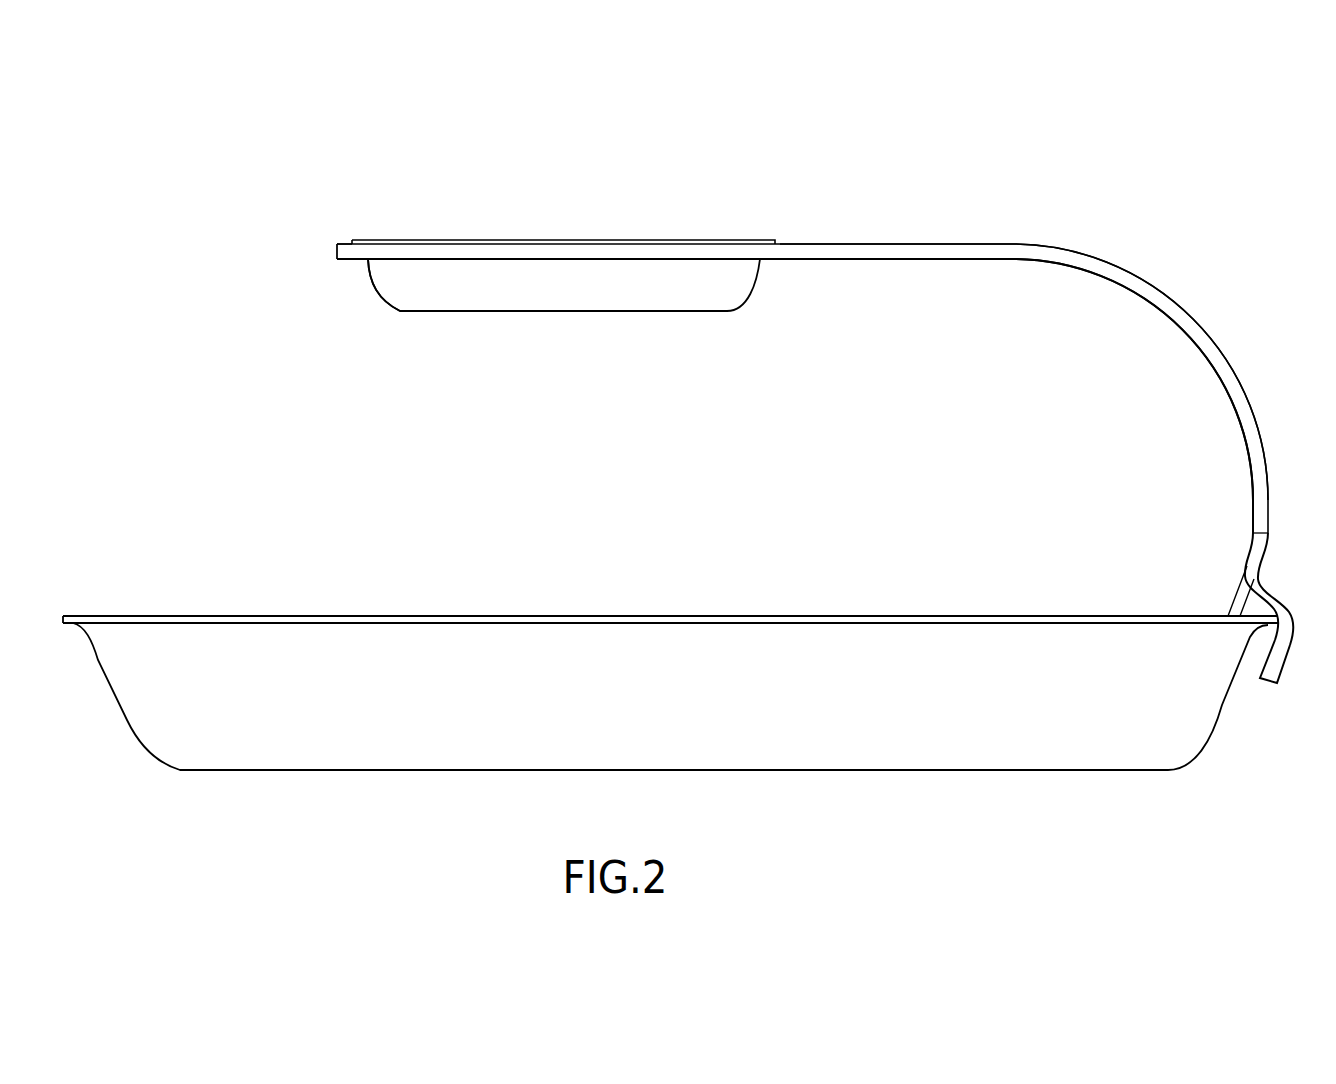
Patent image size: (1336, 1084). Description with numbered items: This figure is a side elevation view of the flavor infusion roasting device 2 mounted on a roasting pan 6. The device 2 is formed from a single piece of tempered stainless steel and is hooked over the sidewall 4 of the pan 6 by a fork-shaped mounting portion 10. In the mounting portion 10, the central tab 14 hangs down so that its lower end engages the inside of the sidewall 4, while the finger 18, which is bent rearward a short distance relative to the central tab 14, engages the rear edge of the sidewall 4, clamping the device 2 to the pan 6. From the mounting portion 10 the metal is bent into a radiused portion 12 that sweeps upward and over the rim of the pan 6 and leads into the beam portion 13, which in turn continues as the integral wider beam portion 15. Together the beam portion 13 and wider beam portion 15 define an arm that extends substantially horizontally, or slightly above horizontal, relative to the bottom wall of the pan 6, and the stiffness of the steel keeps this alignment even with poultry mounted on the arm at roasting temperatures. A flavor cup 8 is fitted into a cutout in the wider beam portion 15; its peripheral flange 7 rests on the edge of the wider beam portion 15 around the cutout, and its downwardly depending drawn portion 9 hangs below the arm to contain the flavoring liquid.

The flavor infusion roasting device 2 is at (850, 228).
The sidewall 4 is at (1222, 707).
The roasting pan 6 is at (544, 609).
The peripheral flange 7 is at (353, 240).
The flavor cup 8 is at (747, 307).
The downwardly depending drawn portion 9 is at (383, 302).
The fork-shaped mounting portion 10 is at (1243, 565).
The radiused portion 12 is at (1197, 325).
The beam portion 13 is at (948, 248).
The central tab 14 is at (1230, 600).
The wider beam portion 15 is at (540, 255).
The finger 18 is at (1287, 653).